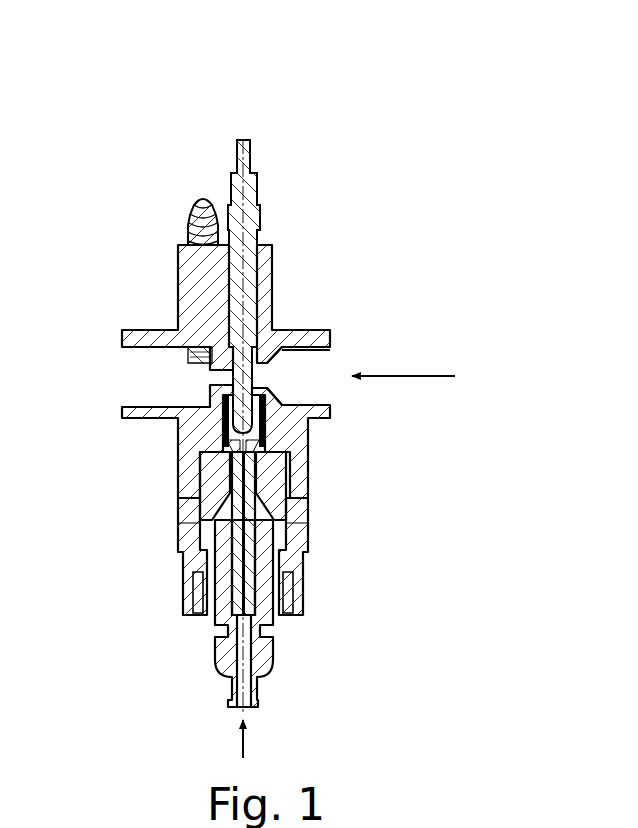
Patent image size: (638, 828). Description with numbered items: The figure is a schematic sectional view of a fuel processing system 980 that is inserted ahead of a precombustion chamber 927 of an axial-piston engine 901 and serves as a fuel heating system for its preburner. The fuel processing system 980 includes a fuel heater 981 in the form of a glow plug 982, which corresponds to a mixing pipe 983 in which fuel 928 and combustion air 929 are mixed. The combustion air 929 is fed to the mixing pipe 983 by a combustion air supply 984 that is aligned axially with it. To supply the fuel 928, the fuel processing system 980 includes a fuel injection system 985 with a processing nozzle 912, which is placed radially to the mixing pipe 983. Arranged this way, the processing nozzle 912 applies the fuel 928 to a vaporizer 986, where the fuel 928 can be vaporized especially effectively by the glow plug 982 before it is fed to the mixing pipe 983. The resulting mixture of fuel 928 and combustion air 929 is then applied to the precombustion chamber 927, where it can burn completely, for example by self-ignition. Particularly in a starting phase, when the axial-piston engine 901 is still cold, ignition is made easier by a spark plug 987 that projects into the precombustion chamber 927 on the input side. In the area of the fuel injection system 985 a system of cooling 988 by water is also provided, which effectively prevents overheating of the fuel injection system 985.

The fuel processing system 980 is at (385, 158).
The fuel heater 981 is at (247, 128).
The glow plug 982 is at (253, 192).
The mixing pipe 983 is at (262, 372).
The combustion air supply 984 is at (316, 378).
The fuel injection system 985 is at (324, 601).
The vaporizer 986 is at (224, 420).
The spark plug 987 is at (190, 215).
The system of cooling 988 is at (276, 508).
The axial-piston engine 901 is at (200, 283).
The processing nozzle 912 is at (226, 582).
The precombustion chamber 927 is at (106, 378).
The fuel 928 is at (246, 742).
The combustion air 929 is at (438, 376).